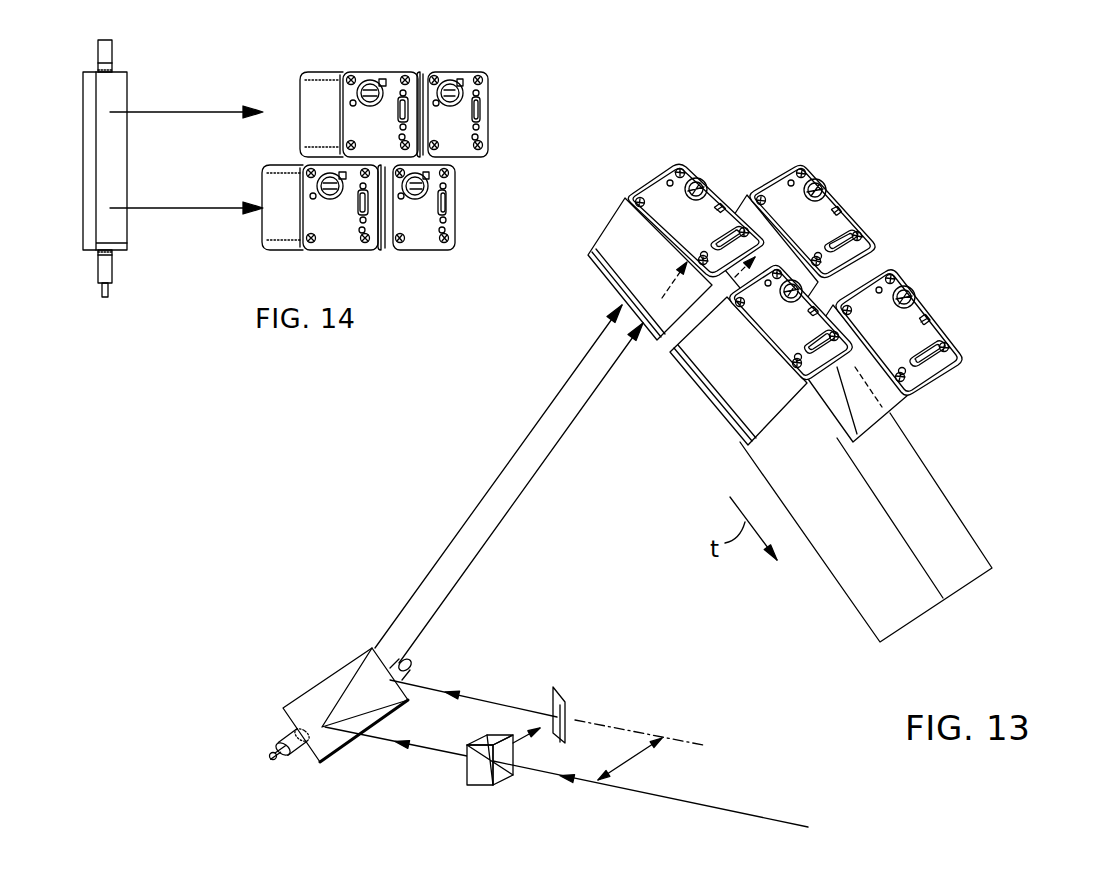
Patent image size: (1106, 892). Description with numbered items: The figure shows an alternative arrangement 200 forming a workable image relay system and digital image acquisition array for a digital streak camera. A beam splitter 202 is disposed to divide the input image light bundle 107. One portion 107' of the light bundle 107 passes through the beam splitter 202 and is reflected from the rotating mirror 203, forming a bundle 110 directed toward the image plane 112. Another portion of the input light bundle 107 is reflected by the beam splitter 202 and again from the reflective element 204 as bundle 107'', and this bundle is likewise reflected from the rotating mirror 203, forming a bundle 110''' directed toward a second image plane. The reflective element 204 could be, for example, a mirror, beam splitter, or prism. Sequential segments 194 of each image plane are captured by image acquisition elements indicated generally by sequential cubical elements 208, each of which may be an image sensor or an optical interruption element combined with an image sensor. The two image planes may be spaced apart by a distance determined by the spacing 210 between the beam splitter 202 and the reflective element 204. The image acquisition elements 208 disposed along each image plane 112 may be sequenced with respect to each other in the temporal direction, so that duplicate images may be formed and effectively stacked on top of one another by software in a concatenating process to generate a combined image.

In FIG. 14, the bundle 110 is at (139, 168).
In FIG. 13, the bundle 110 is at (498, 476).
In FIG. 14, the bundle 110''' is at (187, 78).
In FIG. 13, the bundle 110''' is at (521, 493).
In FIG. 14, the image acquisition element 208 is at (387, 137).
In FIG. 13, the image acquisition element 208 is at (945, 322).
In FIG. 13, the sequential segment 194 is at (740, 447).
In FIG. 13, the arrangement 200 is at (1000, 458).
In FIG. 13, the image plane 112 is at (880, 553).
In FIG. 13, the rotating mirror 203 is at (315, 698).
In FIG. 13, the input image light bundle 107 is at (658, 793).
In FIG. 13, the portion of light bundle 107' is at (396, 758).
In FIG. 13, the bundle 107'' is at (482, 675).
In FIG. 13, the reflective element 204 is at (562, 688).
In FIG. 13, the beam splitter 202 is at (490, 788).
In FIG. 13, the spacing 210 is at (628, 758).